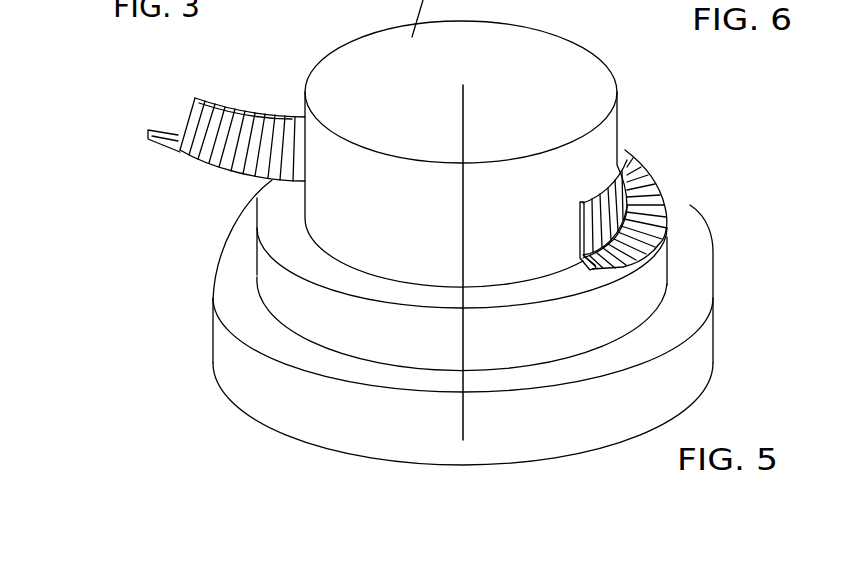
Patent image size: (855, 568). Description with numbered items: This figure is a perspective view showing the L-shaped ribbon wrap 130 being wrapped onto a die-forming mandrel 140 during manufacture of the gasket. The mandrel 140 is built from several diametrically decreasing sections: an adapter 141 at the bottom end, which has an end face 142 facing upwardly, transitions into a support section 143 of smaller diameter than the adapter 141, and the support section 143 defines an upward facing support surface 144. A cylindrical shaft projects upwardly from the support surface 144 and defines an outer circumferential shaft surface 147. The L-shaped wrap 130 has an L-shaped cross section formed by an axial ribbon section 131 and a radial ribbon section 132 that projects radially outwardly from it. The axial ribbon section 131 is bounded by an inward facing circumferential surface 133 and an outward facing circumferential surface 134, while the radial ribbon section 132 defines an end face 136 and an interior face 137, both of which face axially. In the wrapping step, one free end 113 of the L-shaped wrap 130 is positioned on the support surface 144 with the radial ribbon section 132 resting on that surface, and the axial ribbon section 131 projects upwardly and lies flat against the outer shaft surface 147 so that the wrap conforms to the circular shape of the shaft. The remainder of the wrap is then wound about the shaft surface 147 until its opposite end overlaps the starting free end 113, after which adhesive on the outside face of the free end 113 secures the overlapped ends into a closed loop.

The free end 113 is at (608, 257).
The L-shaped ribbon wrap 130 is at (672, 194).
The axial ribbon section 131 is at (622, 150).
The radial ribbon section 132 is at (667, 213).
The inward facing circumferential surface 133 is at (242, 128).
The outward facing circumferential surface 134 is at (638, 187).
The end face 136 is at (604, 252).
The interior face 137 is at (642, 236).
The die-forming mandrel 140 is at (510, 435).
The adapter 141 is at (217, 332).
The end face 142 is at (232, 268).
The support section 143 is at (267, 257).
The support surface 144 is at (277, 205).
The outer circumferential shaft surface 147 is at (603, 139).